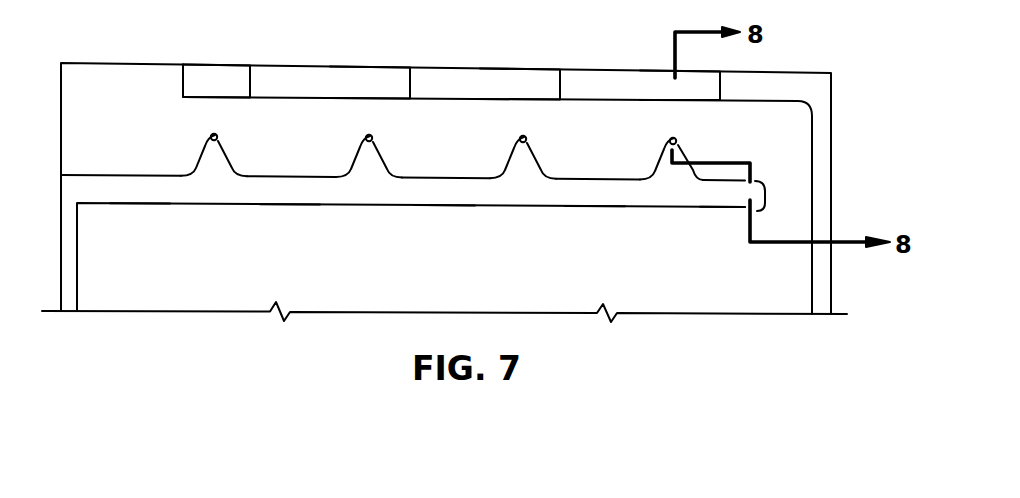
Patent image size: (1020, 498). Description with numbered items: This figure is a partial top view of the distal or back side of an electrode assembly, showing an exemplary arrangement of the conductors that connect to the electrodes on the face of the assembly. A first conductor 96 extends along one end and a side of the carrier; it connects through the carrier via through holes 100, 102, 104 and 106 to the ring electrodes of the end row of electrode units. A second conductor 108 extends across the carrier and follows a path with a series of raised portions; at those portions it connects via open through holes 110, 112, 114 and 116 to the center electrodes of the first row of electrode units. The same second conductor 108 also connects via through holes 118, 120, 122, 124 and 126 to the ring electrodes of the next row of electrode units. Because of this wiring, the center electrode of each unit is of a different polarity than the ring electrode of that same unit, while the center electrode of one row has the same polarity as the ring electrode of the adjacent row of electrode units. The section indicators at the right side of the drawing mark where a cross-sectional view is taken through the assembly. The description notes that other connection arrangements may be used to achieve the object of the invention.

The first conductor 96 is at (823, 90).
The through hole 100 is at (670, 86).
The through hole 102 is at (522, 80).
The through hole 104 is at (369, 80).
The through hole 106 is at (215, 77).
The conductive trace 108 is at (92, 177).
The open through hole 110 is at (219, 135).
The open through hole 112 is at (374, 136).
The open through hole 114 is at (528, 137).
The open through hole 116 is at (678, 139).
The through hole 118 is at (138, 192).
The through hole 120 is at (291, 192).
The through hole 122 is at (445, 194).
The through hole 124 is at (596, 194).
The through hole 126 is at (747, 194).